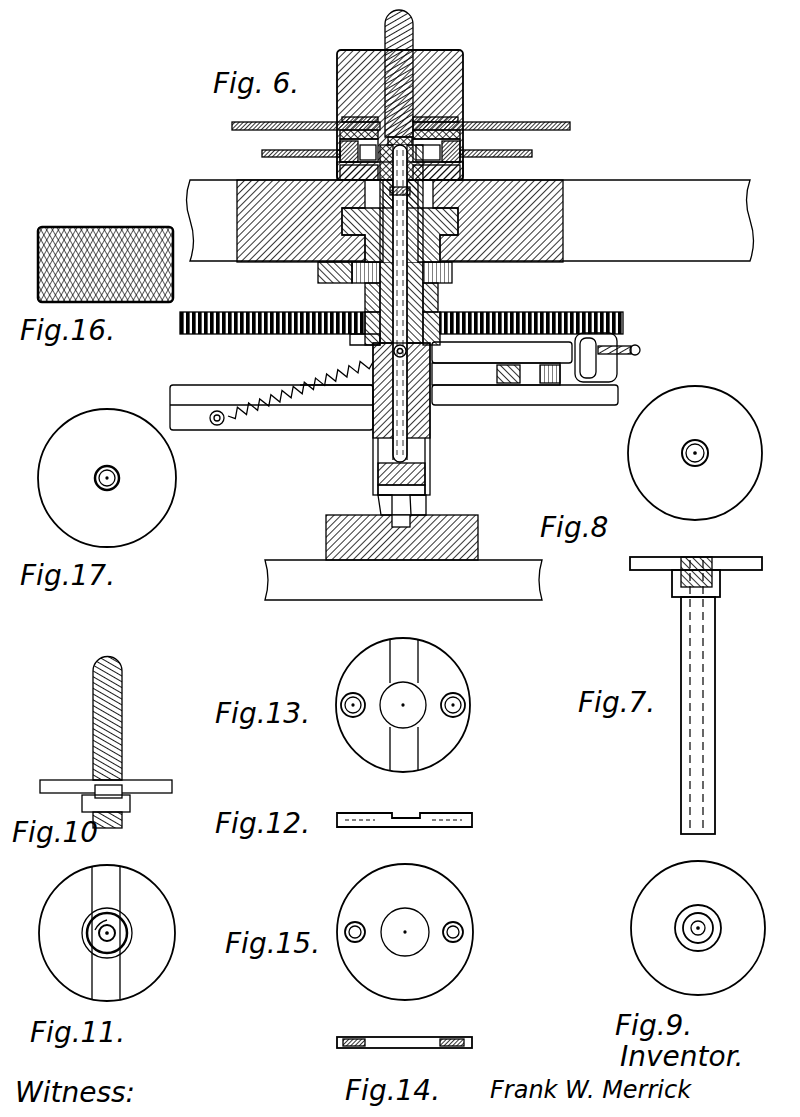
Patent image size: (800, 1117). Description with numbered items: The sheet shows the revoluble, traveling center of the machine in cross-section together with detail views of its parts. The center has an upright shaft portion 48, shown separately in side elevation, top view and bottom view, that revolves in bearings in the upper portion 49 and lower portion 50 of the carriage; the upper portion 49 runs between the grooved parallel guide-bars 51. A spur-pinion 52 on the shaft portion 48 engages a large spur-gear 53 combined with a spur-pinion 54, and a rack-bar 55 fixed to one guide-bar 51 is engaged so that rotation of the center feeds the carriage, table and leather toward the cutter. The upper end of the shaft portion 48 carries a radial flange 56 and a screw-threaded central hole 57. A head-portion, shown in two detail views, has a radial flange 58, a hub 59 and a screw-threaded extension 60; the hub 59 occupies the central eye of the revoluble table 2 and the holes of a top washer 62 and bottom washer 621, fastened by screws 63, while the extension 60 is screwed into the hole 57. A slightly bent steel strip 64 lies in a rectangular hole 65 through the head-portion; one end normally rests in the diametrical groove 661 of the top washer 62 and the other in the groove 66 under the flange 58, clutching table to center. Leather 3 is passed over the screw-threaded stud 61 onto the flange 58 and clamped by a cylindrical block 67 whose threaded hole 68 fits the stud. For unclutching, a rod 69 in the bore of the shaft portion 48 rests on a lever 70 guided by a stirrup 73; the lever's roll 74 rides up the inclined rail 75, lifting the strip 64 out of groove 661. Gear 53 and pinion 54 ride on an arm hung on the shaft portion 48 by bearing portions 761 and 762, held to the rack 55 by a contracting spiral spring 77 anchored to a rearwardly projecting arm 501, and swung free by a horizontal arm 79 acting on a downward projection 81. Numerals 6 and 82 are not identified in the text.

In FIG. 6, the revoluble table 2 is at (262, 154).
In FIG. 6, the sheet material 3 is at (232, 127).
In FIG. 11, the slot 6 is at (95, 934).
In FIG. 6, the shaft portion 48 is at (430, 288).
In FIG. 7, the shaft portion 48 is at (715, 702).
In FIG. 9, the shaft portion 48 is at (708, 924).
In FIG. 6, the upper portion of the carriage 49 is at (454, 235).
In FIG. 6, the lower portion of the carriage 50 is at (430, 423).
In FIG. 6, the guide-bars 51 is at (258, 250).
In FIG. 6, the spur-pinion 52 is at (372, 340).
In FIG. 6, the spur-gear 53 is at (624, 318).
In FIG. 6, the spur-pinion 54 is at (452, 279).
In FIG. 6, the rack-bar 55 is at (328, 283).
In FIG. 6, the radial flange 56 is at (463, 176).
In FIG. 8, the radial flange 56 is at (628, 452).
In FIG. 7, the radial flange 56 is at (660, 595).
In FIG. 9, the radial flange 56 is at (632, 922).
In FIG. 8, the central hole 57 is at (693, 441).
In FIG. 7, the central hole 57 is at (703, 557).
In FIG. 6, the radial flange 58 is at (462, 136).
In FIG. 10, the radial flange 58 is at (55, 780).
In FIG. 11, the radial flange 58 is at (148, 985).
In FIG. 10, the hub 59 is at (130, 804).
In FIG. 11, the hub 59 is at (130, 924).
In FIG. 10, the screw-threaded extension 60 is at (122, 824).
In FIG. 6, the screw-threaded stud 61 is at (413, 40).
In FIG. 10, the screw-threaded stud 61 is at (122, 722).
In FIG. 11, the screw-threaded stud 61 is at (113, 943).
In FIG. 6, the top washer 62 is at (340, 150).
In FIG. 13, the top washer 62 is at (454, 673).
In FIG. 12, the top washer 62 is at (472, 822).
In FIG. 6, the screws 63 is at (342, 122).
In FIG. 6, the strip 64 is at (412, 137).
In FIG. 10, the rectangular hole 65 is at (108, 797).
In FIG. 11, the groove 66 is at (110, 890).
In FIG. 6, the cylindrical block 67 is at (463, 72).
In FIG. 16, the cylindrical block 67 is at (41, 235).
In FIG. 17, the cylindrical block 67 is at (78, 426).
In FIG. 17, the screw-threaded hole 68 is at (112, 467).
In FIG. 6, the rod 69 is at (393, 454).
In FIG. 6, the lever 70 is at (378, 480).
In FIG. 6, the stirrup 73 is at (430, 457).
In FIG. 6, the roll 74 is at (426, 506).
In FIG. 6, the rail 75 is at (326, 540).
In FIG. 6, the contracting spiral spring 77 is at (290, 373).
In FIG. 6, the horizontal arm 79 is at (520, 405).
In FIG. 6, the downward projection 81 is at (560, 385).
In FIG. 6, the clip 82 is at (640, 351).
In FIG. 6, the rearwardly projecting arm 501 is at (260, 430).
In FIG. 6, the bottom washer 621 is at (340, 173).
In FIG. 15, the bottom washer 621 is at (453, 881).
In FIG. 14, the bottom washer 621 is at (464, 1037).
In FIG. 13, the diametrical groove 661 is at (412, 661).
In FIG. 12, the diametrical groove 661 is at (406, 812).
In FIG. 6, the bearing portion 761 is at (373, 386).
In FIG. 6, the bearing portion 762 is at (380, 299).